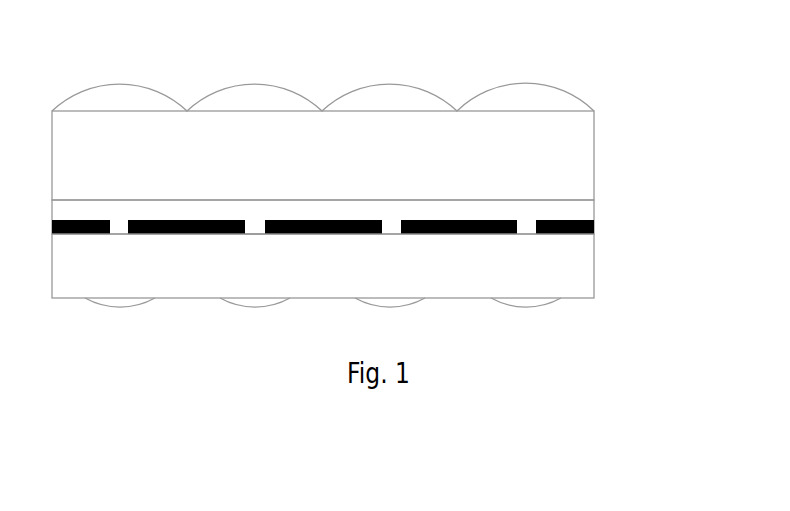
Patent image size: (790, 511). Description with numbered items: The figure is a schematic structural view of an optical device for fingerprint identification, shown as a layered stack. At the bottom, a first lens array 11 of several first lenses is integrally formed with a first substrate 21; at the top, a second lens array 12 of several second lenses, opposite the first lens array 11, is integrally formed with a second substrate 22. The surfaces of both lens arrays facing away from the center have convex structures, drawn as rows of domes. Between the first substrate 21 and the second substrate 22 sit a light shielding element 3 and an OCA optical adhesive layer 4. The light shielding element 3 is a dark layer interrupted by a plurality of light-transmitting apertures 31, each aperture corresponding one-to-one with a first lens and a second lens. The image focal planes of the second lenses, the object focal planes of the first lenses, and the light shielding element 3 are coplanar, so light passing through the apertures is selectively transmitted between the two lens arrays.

The second lens array 12 is at (519, 104).
The second substrate 22 is at (565, 140).
The OCA optical adhesive layer 4 is at (585, 208).
The light shielding element 3 is at (594, 230).
The light-transmitting aperture 31 is at (257, 220).
The first substrate 21 is at (564, 264).
The first lens array 11 is at (535, 302).